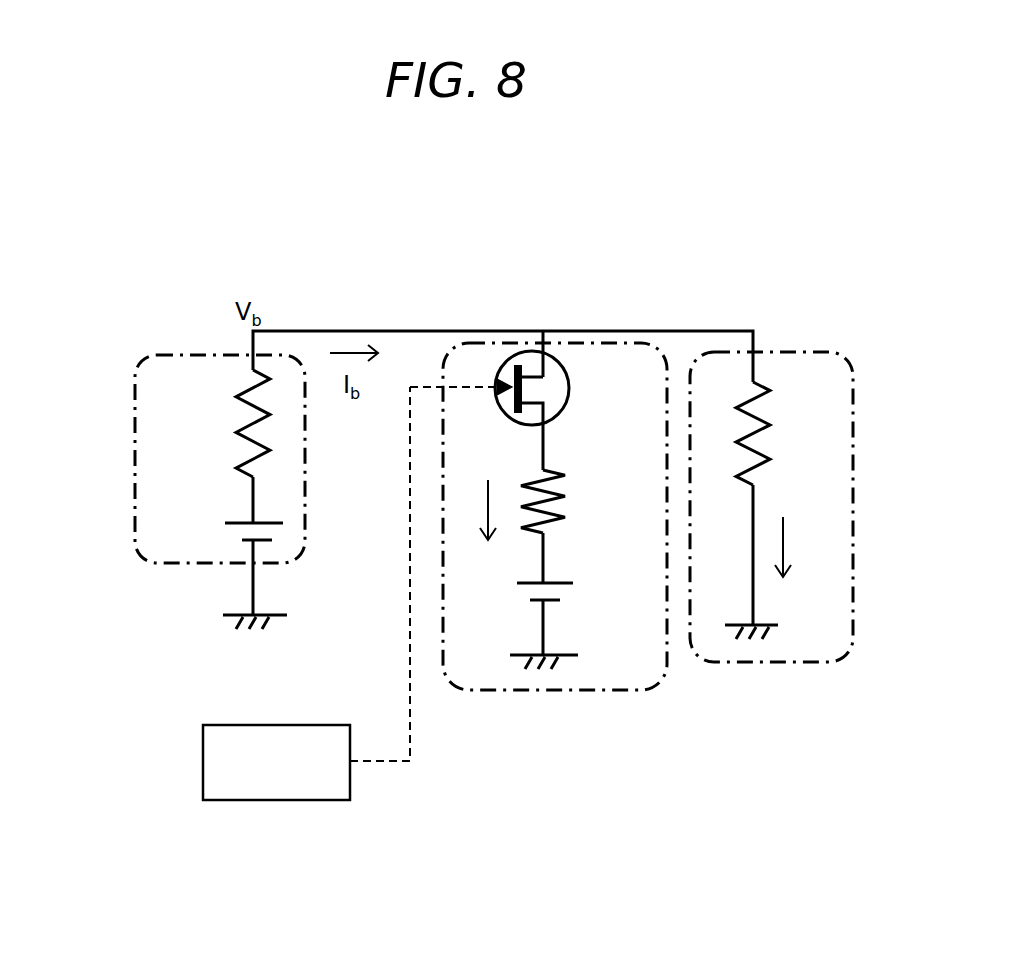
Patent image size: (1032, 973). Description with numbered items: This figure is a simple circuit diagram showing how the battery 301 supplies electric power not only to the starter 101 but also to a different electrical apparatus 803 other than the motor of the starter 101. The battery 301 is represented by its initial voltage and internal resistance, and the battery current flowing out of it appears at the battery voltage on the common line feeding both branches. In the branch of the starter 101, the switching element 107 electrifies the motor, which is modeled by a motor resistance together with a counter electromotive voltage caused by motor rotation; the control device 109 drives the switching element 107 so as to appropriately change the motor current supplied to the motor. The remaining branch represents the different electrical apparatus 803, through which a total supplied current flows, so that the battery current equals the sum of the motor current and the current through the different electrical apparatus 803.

The starter 101 is at (542, 427).
The switching element 107 is at (507, 352).
The control device 109 is at (203, 753).
The battery 301 is at (132, 462).
The different electrical apparatus 803 is at (812, 350).